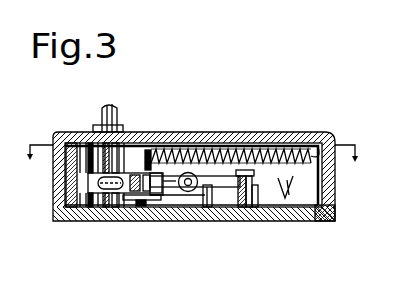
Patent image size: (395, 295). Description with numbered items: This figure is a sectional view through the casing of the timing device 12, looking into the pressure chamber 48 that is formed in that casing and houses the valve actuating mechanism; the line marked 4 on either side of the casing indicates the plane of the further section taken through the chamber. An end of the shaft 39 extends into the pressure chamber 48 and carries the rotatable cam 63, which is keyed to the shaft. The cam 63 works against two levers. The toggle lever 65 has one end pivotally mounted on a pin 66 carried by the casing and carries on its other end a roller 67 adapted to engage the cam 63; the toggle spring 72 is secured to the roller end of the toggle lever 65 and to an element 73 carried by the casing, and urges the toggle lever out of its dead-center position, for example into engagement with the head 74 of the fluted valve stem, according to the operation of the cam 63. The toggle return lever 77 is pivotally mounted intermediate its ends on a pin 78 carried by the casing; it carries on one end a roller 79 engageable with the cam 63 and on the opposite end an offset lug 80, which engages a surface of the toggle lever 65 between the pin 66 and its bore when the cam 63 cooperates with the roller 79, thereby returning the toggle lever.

The timing device 12 is at (197, 127).
The shaft 39 is at (117, 112).
The toggle spring 72 is at (226, 156).
The element 73 is at (318, 147).
The rotatable cam 63 is at (97, 182).
The roller 79 is at (104, 192).
The pin 78 is at (112, 193).
The roller 67 is at (160, 192).
The toggle return lever 77 is at (185, 206).
The head 74 is at (189, 192).
The lug 80 is at (238, 192).
The toggle lever 65 is at (220, 188).
The pin 66 is at (253, 186).
The pressure chamber 48 is at (316, 200).
The section line 4- 4 is at (193, 167).